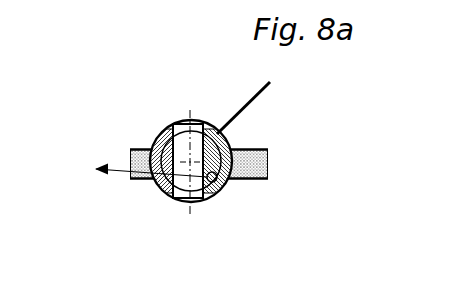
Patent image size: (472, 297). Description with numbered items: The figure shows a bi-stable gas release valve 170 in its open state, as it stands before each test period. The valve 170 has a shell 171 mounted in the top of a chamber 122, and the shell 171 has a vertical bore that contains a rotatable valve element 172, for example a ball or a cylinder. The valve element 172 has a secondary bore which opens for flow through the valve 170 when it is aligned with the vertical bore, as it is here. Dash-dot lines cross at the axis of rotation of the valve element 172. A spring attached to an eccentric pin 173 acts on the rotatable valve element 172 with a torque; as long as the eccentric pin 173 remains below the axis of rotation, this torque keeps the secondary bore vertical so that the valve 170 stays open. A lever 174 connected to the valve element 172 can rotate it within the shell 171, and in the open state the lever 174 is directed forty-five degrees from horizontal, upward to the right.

The gas release valve 170 is at (127, 40).
The chamber 122 is at (253, 150).
The shell 171 is at (160, 193).
The rotatable valve element 172 is at (160, 142).
The eccentric pin 173 is at (217, 182).
The lever 174 is at (250, 97).